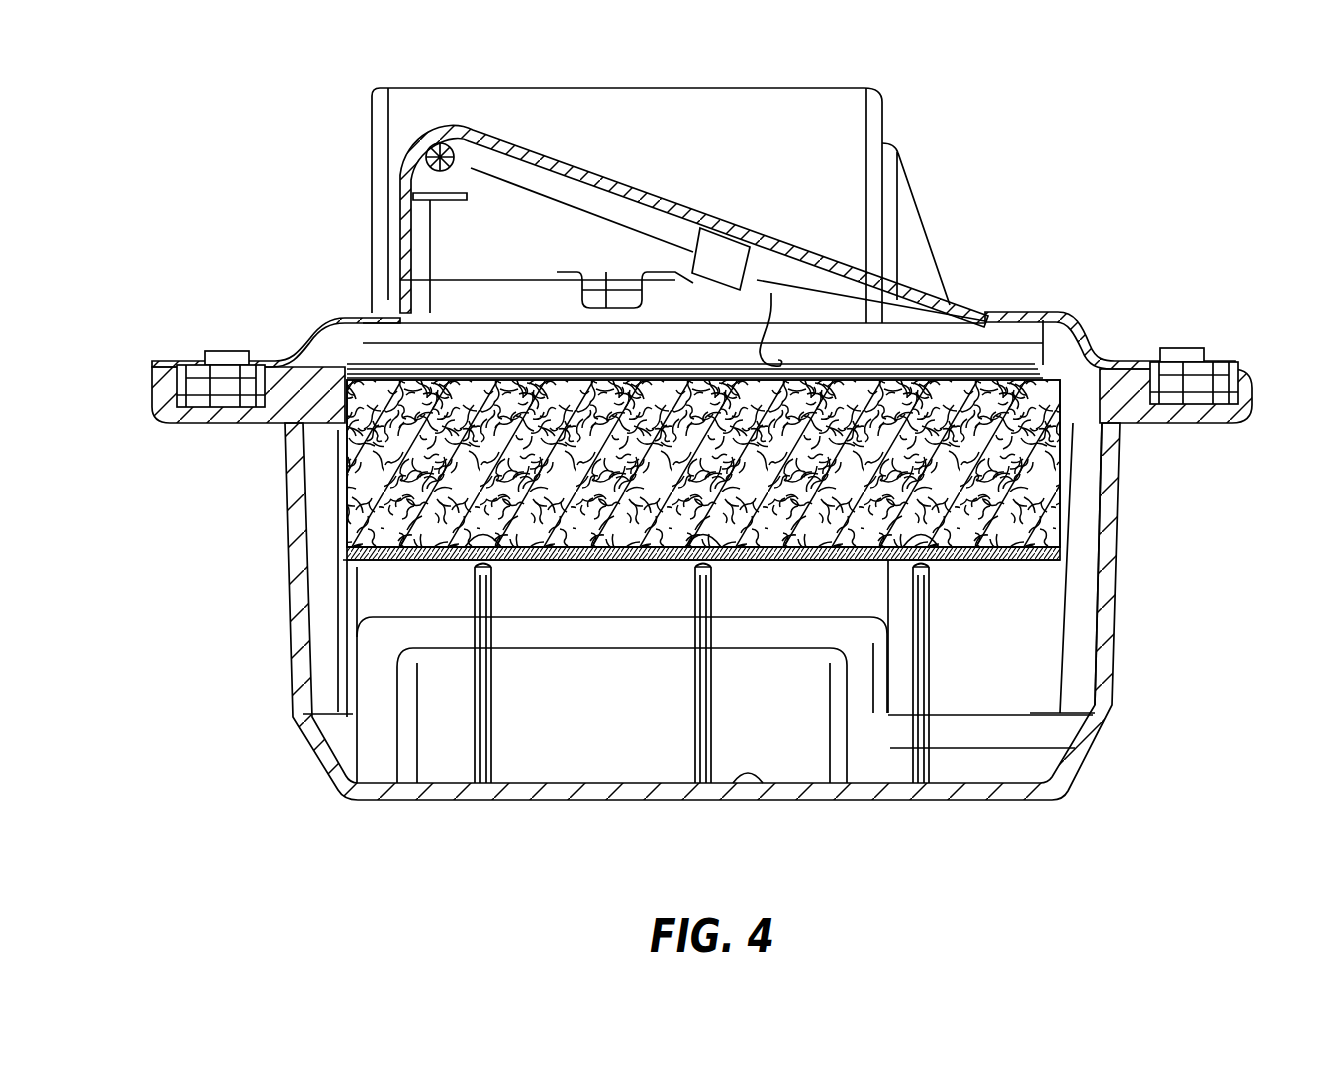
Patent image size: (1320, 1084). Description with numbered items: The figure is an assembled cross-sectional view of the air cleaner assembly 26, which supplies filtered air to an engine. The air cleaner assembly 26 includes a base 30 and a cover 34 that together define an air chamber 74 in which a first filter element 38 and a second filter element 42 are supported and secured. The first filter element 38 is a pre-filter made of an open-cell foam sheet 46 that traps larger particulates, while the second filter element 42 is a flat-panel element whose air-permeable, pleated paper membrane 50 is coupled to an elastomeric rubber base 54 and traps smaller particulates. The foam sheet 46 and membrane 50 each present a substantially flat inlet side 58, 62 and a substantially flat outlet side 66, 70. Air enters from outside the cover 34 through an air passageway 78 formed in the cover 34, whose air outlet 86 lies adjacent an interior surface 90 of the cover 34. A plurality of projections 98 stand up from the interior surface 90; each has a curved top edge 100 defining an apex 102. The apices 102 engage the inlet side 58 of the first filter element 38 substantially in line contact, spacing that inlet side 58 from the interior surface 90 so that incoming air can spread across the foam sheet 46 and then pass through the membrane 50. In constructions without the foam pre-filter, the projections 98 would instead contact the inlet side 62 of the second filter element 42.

The air cleaner assembly 26 is at (1025, 210).
The base 30 is at (1018, 316).
The cover 34 is at (1105, 668).
The first filter element 38 is at (1087, 546).
The second filter element 42 is at (1082, 462).
The open-cell foam sheet 46 is at (357, 557).
The membrane 50 is at (373, 490).
The rubber base 54 is at (307, 395).
The inlet side 58 is at (610, 562).
The inlet side 62 is at (657, 562).
The outlet side 66 is at (370, 533).
The outlet side 70 is at (478, 378).
The air chamber 74 is at (1007, 747).
The air passageway 78 is at (557, 752).
The air outlet 86 is at (790, 650).
The interior surface 90 is at (760, 773).
The projections 98 is at (477, 690).
The top edge 100 is at (477, 562).
The apex 102 is at (510, 548).